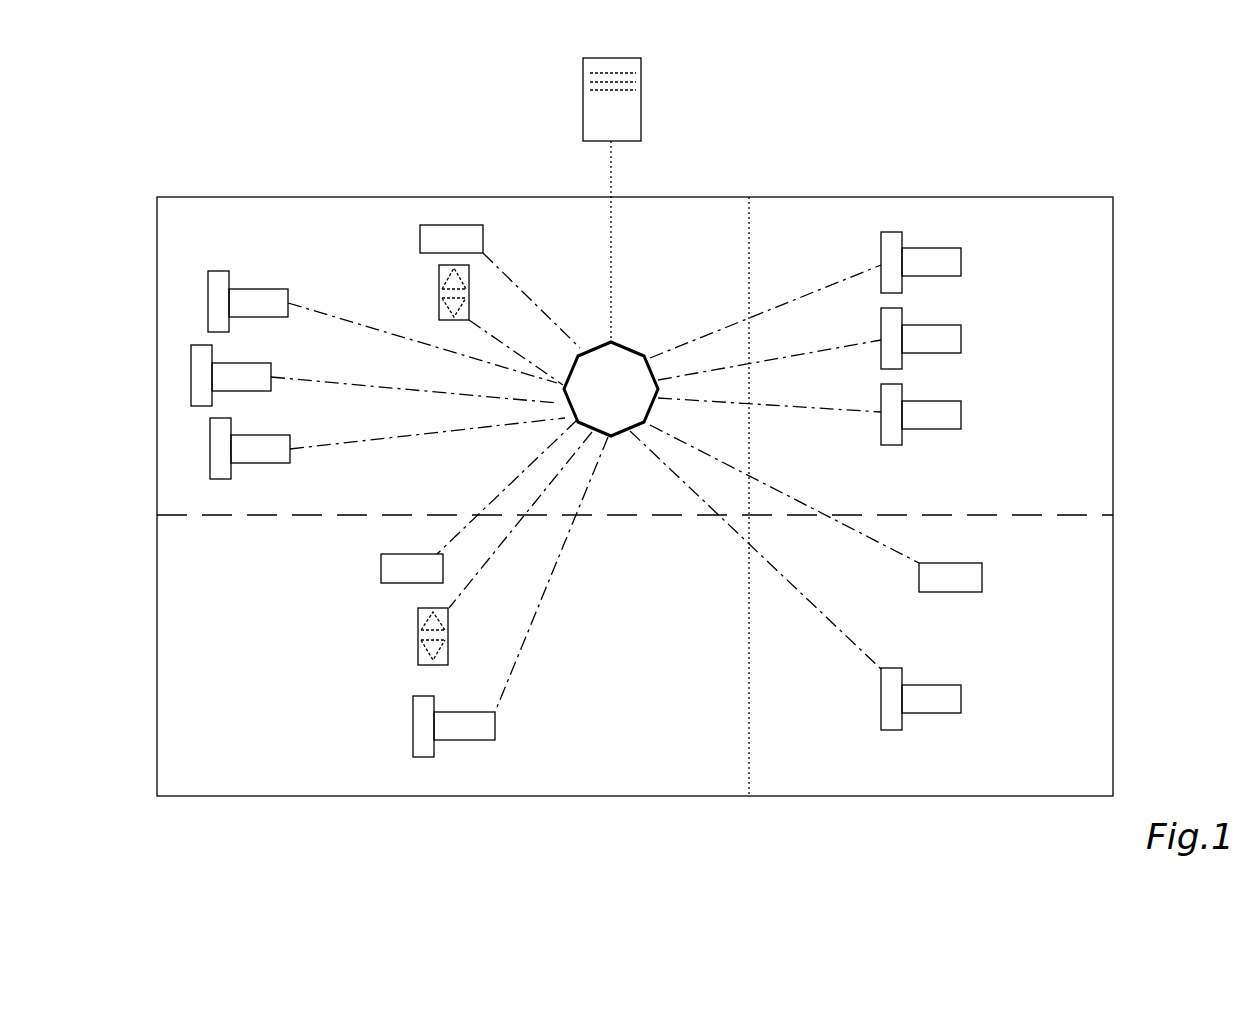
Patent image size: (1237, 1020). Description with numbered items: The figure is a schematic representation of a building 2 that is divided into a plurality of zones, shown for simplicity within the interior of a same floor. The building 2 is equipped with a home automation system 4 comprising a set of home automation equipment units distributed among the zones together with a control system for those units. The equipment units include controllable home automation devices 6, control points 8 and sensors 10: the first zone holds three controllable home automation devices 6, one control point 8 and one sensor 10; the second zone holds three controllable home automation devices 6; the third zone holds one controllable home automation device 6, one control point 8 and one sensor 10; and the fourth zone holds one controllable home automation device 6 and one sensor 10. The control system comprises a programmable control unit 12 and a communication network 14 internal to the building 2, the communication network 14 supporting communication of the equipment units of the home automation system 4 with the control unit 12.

The building 2 is at (1113, 222).
The home automation system 4 is at (1056, 162).
The controllable home automation device 6 is at (218, 306).
The control point 8 is at (439, 292).
The sensor 10 is at (420, 238).
The programmable control unit 12 is at (594, 125).
The communication network 14 is at (611, 389).